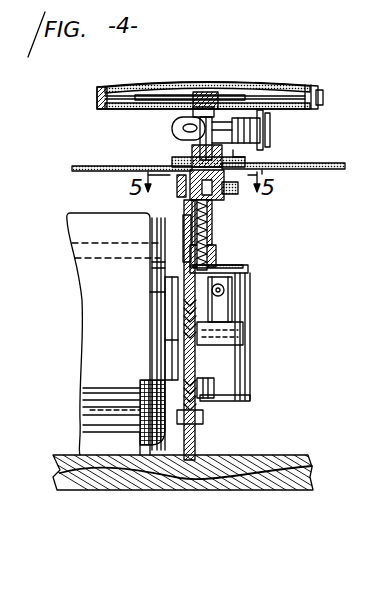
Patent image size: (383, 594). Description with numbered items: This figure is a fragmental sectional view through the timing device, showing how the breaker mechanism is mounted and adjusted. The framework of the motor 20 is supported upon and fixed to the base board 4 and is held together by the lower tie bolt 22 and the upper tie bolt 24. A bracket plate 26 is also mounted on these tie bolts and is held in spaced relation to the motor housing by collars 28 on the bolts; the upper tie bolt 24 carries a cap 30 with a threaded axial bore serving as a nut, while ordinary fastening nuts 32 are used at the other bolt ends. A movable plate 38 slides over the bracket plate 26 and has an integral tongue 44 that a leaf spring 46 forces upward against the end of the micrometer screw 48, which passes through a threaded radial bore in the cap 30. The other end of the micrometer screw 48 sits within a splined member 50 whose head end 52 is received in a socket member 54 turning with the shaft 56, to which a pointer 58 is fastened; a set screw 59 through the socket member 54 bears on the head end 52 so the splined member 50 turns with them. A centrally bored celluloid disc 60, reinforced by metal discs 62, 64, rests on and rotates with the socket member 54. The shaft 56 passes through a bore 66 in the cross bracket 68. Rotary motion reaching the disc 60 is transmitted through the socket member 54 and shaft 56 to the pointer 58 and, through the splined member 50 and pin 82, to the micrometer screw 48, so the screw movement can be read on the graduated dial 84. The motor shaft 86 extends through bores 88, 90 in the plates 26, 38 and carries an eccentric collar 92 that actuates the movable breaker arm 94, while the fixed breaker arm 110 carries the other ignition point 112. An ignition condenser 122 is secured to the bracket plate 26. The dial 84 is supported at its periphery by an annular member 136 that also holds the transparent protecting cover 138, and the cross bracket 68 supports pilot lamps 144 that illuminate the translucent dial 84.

The base board 4 is at (120, 477).
The motor 20 is at (90, 334).
The lower tie bolt 22 is at (220, 440).
The upper tie bolt 24 is at (88, 262).
The bracket plate 26 is at (190, 370).
The collars 28 is at (170, 237).
The cap 30 is at (215, 242).
The fastening nuts 32 is at (189, 462).
The movable plate 38 is at (185, 296).
The tongue 44 is at (240, 268).
The leaf spring 46 is at (226, 291).
The micrometer screw 48 is at (165, 264).
The splined member 50 is at (214, 224).
The head end 52 is at (193, 162).
The socket member 54 is at (193, 201).
The shaft 56 is at (212, 128).
The pointer 58 is at (168, 100).
The set screw 59 is at (222, 196).
The centrally bored disc 60 is at (333, 166).
The centrally bored metal disc 62 is at (250, 170).
The centrally bored metal disc 64 is at (240, 160).
The bore 66 is at (170, 128).
The cross bracket 68 is at (235, 150).
The pin 82 is at (208, 208).
The graduated scale or dial 84 is at (128, 103).
The motor shaft 86 is at (190, 336).
The bore 88 is at (190, 318).
The bore 90 is at (185, 350).
The eccentric collar 92 is at (238, 341).
The movable breaker arm 94 is at (230, 363).
The fixed breaker arm 110 is at (197, 369).
The ignition point 112 is at (246, 312).
The ignition condenser 122 is at (246, 382).
The annular member 136 is at (324, 96).
The transparent protecting cover 138 is at (222, 82).
The pilot lamps 144 is at (188, 150).